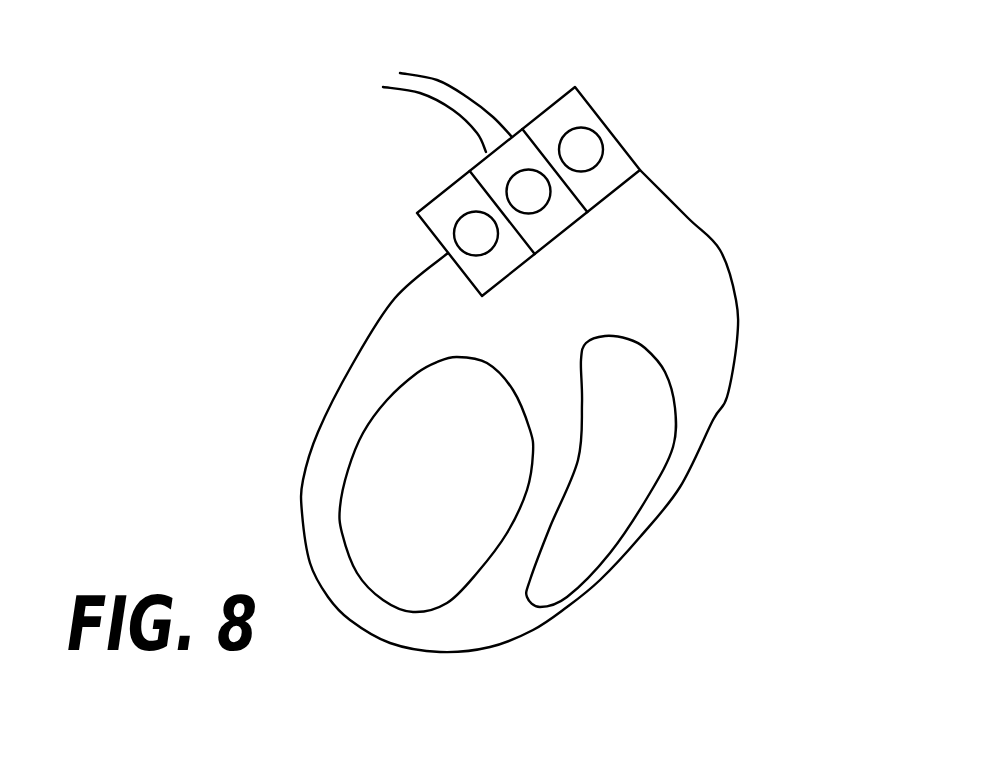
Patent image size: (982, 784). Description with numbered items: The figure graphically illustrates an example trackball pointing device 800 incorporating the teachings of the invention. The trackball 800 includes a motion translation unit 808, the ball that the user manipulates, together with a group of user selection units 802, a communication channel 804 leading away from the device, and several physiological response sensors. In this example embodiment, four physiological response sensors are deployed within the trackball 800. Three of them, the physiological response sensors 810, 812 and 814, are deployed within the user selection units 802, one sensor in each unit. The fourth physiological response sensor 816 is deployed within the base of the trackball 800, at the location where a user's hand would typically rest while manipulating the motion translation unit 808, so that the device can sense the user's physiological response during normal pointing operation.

The trackball pointing device 800 is at (237, 155).
The user selection units 802 is at (511, 146).
The communication channel 804 is at (448, 97).
The motion translation unit 808 is at (390, 426).
The physiological response sensor 810 is at (584, 118).
The physiological response sensor 812 is at (537, 195).
The physiological response sensor 814 is at (470, 237).
The physiological response sensor 816 is at (642, 456).